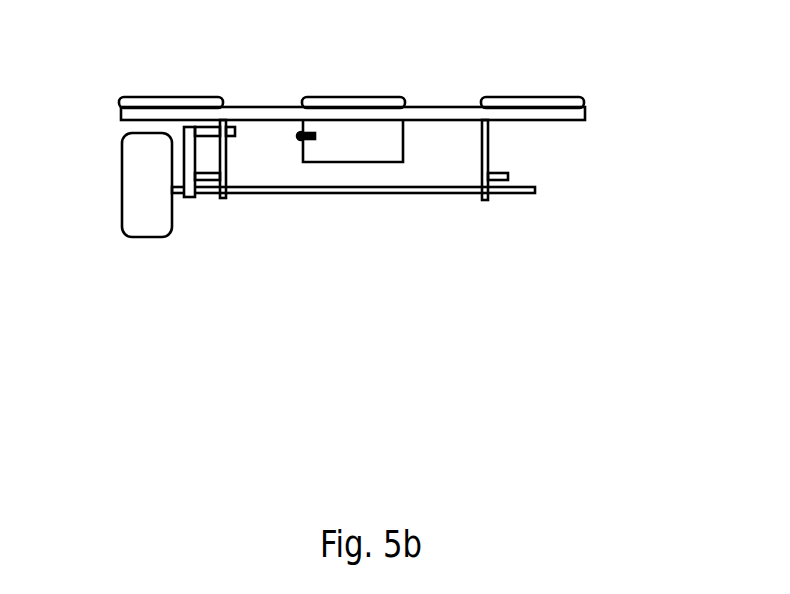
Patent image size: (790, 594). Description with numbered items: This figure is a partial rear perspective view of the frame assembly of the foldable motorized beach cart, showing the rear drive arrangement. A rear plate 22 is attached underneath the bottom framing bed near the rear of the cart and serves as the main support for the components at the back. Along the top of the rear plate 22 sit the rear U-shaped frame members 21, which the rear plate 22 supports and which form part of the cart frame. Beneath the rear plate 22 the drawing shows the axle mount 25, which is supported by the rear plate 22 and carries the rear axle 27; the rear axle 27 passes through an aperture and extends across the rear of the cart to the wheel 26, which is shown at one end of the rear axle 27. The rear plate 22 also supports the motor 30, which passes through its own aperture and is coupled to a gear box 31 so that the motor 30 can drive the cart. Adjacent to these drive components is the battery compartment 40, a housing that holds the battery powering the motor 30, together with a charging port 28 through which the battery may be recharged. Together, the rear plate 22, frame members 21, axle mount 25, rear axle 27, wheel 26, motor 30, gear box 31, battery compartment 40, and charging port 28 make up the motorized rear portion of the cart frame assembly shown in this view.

The rear "U"-shaped frame members 21 is at (170, 96).
The rear plate 22 is at (585, 115).
The axle mount 25 is at (227, 165).
The wheel 26 is at (122, 232).
The rear axle 27 is at (535, 193).
The charging port 28 is at (305, 141).
The motor 30 is at (236, 133).
The gear box 31 is at (190, 188).
The battery compartment 40 is at (326, 152).